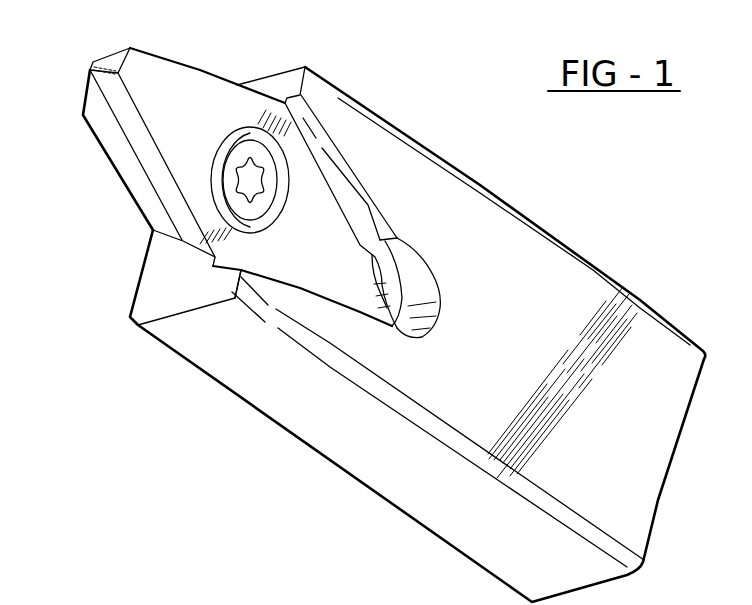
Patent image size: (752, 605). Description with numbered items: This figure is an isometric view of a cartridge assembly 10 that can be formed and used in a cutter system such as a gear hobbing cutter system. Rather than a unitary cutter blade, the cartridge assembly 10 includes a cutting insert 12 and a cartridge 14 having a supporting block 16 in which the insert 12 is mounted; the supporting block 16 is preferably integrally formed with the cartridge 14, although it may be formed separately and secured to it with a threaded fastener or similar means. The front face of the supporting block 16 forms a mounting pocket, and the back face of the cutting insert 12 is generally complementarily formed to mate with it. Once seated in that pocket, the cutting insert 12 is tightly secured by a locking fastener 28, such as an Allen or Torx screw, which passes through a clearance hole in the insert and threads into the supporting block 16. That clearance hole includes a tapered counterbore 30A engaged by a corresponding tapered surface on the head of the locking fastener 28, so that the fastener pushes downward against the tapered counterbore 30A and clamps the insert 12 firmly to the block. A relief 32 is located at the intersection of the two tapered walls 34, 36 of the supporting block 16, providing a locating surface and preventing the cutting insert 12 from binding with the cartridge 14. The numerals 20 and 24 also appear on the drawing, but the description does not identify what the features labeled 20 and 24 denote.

The cartridge assembly 10 is at (592, 232).
The cutting insert 12 is at (156, 89).
The cartridge 14 is at (260, 381).
The supporting block 16 is at (112, 164).
The pocket back wall 20 is at (230, 84).
The insert side face 24 is at (182, 193).
The locking fastener 28 is at (240, 156).
The tapered counterbore 30A is at (268, 214).
The relief 32 is at (437, 312).
The tapered wall 34 is at (338, 162).
The tapered wall 36 is at (337, 303).